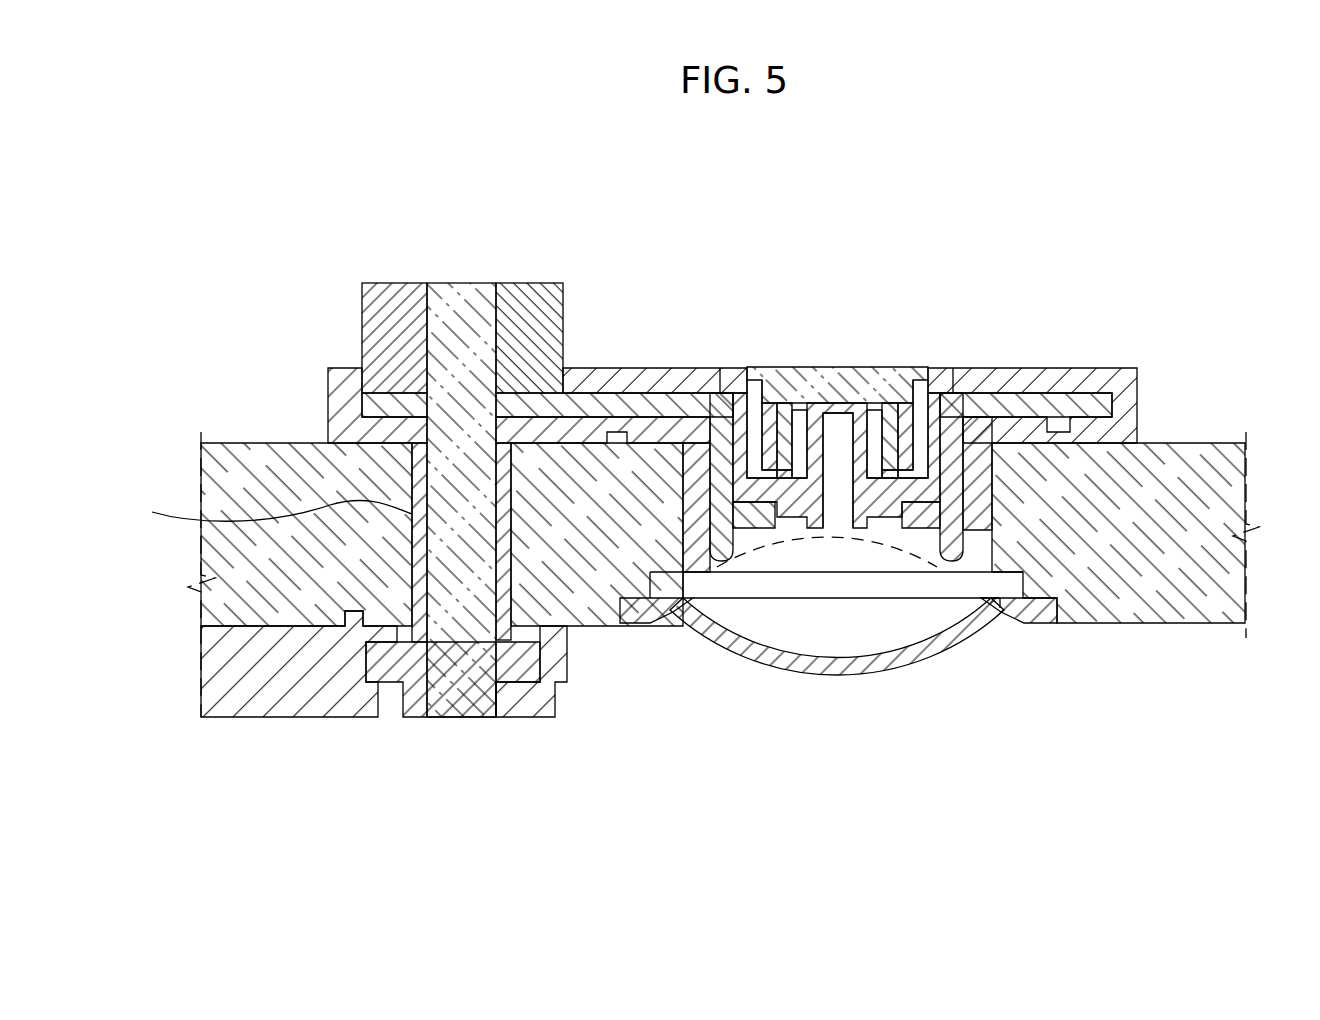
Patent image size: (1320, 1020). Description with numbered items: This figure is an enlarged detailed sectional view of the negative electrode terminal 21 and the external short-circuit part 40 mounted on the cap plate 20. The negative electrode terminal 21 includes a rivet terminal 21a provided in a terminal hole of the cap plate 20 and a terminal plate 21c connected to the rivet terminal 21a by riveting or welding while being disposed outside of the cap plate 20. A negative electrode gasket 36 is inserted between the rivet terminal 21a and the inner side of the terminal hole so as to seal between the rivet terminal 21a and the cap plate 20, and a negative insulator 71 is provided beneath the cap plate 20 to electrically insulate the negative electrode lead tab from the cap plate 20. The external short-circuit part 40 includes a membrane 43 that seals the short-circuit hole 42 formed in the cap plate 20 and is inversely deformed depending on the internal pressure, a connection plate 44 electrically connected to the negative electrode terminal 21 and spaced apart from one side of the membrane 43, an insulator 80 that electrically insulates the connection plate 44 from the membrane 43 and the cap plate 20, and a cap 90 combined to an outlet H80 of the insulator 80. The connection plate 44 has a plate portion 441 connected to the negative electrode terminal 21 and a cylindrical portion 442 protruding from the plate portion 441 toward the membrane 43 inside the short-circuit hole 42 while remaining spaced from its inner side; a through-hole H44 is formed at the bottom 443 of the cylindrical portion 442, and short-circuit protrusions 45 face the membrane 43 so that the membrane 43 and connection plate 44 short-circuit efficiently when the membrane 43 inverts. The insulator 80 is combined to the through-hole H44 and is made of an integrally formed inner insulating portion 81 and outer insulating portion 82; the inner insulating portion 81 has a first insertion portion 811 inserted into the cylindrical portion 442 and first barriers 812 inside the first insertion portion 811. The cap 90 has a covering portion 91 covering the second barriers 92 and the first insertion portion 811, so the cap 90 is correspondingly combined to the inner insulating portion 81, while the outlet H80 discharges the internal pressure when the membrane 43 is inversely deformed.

The cap plate 20 is at (1162, 596).
The negative electrode terminal 21 is at (489, 449).
The rivet terminal 21a is at (466, 296).
The terminal plate 21c is at (533, 298).
The negative electrode gasket 36 is at (315, 542).
The external short-circuit part 40 is at (706, 480).
The short-circuit hole 42 is at (1002, 616).
The membrane 43 is at (717, 633).
The connection plate 44 is at (382, 396).
The plate portion 441 is at (988, 406).
The cylindrical portion 442 is at (960, 455).
The bottom 443 is at (910, 517).
The short-circuit protrusions 45 is at (951, 562).
The negative insulator 71 is at (258, 700).
The insulator 80 is at (806, 342).
The inner insulating portion 81 is at (806, 342).
The first insertion portion 811 is at (755, 420).
The first barriers 812 is at (792, 427).
The outer insulating portion 82 is at (1128, 398).
The cap 90 is at (844, 361).
The covering portion 91 is at (864, 406).
The second barriers 92 is at (888, 432).
The through-hole H44 is at (857, 532).
The outlet H80 is at (837, 514).